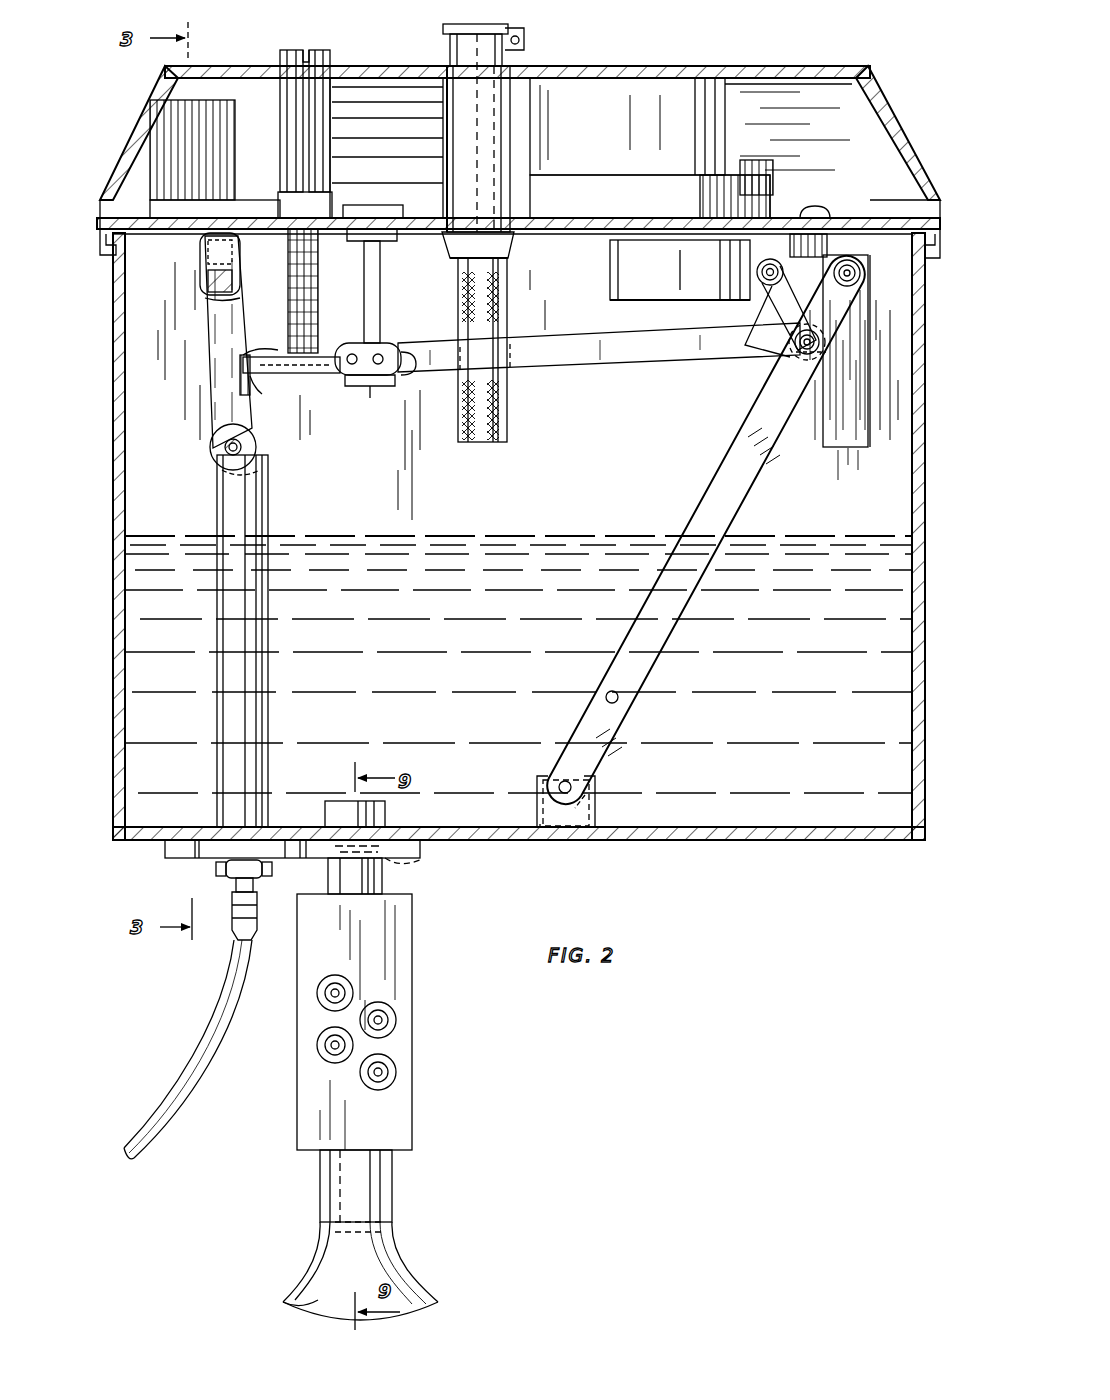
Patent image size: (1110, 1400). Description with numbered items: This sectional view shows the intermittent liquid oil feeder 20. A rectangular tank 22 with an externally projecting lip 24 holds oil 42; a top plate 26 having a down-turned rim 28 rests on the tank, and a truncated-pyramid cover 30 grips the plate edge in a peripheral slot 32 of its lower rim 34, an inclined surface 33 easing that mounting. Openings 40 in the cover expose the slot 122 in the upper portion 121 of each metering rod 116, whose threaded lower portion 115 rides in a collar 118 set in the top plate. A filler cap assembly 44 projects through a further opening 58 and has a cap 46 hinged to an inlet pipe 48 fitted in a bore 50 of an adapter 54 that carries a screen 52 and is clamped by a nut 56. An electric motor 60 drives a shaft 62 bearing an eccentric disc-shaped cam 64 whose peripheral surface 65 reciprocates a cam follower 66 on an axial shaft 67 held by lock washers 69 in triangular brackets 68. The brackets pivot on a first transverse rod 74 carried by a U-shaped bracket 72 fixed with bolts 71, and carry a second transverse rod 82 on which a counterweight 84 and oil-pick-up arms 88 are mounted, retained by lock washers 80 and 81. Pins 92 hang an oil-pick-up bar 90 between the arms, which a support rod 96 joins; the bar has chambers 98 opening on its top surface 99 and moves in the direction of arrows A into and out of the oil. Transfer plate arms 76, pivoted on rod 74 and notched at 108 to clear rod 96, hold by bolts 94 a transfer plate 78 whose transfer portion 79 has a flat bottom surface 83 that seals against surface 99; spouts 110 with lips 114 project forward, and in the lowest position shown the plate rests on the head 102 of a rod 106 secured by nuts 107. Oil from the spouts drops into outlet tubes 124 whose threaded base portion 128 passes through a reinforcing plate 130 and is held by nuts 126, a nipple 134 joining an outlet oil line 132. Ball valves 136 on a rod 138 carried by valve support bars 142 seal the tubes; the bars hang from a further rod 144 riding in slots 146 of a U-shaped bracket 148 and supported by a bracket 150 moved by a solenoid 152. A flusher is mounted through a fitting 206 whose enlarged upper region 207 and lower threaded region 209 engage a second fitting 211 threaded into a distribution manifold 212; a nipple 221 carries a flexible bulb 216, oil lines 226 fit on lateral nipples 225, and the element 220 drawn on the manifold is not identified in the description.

The intermittent liquid oil feeder 20 is at (905, 98).
The rectangular tank 22 is at (113, 770).
The externally projecting lip 24 is at (912, 252).
The top plate 26 is at (830, 218).
The down-turned rim 28 is at (885, 240).
The cover 30 is at (900, 124).
The peripheral slot 32 is at (932, 195).
The inclined surface 33 is at (106, 258).
The lower rim 34 is at (945, 248).
The openings 40 is at (332, 72).
The oil 42 is at (818, 552).
The filler cap assembly 44 is at (452, 24).
The cap 46 is at (526, 38).
The inlet pipe 48 is at (452, 58).
The bore 50 is at (512, 146).
The screen 52 is at (508, 300).
The adapter 54 is at (447, 150).
The nut 56 is at (455, 258).
The further opening 58 is at (548, 70).
The electric motor 60 is at (722, 128).
The drive shaft 62 is at (705, 240).
The disc-shaped cam 64 is at (648, 296).
The peripheral surface 65 is at (610, 262).
The cam follower 66 is at (740, 218).
The axial shaft 67 is at (775, 258).
The triangular brackets 68 is at (770, 300).
The lock washers 69 is at (770, 335).
The bolts 71 is at (808, 206).
The U-shaped bracket 72 is at (812, 234).
The first transverse rod 74 is at (800, 358).
The transfer plate arms 76 is at (592, 365).
The transfer plate 78 is at (355, 382).
The transfer portion 79 is at (244, 352).
The lock washers 80 is at (862, 282).
The lock washers 81 is at (820, 342).
The second transverse rod 82 is at (860, 278).
The flat bottom surface 83 is at (295, 374).
The counterweight 84 is at (860, 414).
The oil-pick-up arms 88 is at (758, 472).
The oil-pick-up bar 90 is at (596, 818).
The pins 92 is at (560, 781).
The bolts 94 is at (382, 353).
The support rod 96 is at (620, 702).
The chambers 98 is at (600, 792).
The top surface 99 is at (537, 778).
The head 102 is at (378, 390).
The rod 106 is at (372, 300).
The nuts 107 is at (390, 241).
The notches 108 is at (420, 378).
The spouts 110 is at (240, 374).
The lip 114 is at (260, 394).
The threaded lower portion 115 is at (290, 318).
The metering rod 116 is at (338, 150).
The collar 118 is at (345, 205).
The upper portion 121 is at (290, 155).
The slot 122 is at (306, 60).
The outlet tube 124 is at (262, 510).
The nuts 126 is at (216, 868).
The threaded base portion 128 is at (253, 886).
The reinforcing plate 130 is at (198, 846).
The outlet oil line 132 is at (202, 1052).
The nipple 134 is at (232, 898).
The ball valves 136 is at (258, 446).
The rod 138 is at (228, 447).
The valve support bars 142 is at (215, 340).
The further rod 144 is at (205, 292).
The slots 146 is at (200, 262).
The U-shaped bracket 148 is at (240, 282).
The bracket 150 is at (236, 262).
The solenoid 152 is at (215, 159).
The fitting 206 is at (388, 818).
The upper region 207 is at (336, 801).
The lower threaded region 209 is at (420, 872).
The second fitting 211 is at (384, 888).
The distribution manifold 212 is at (404, 944).
The bulb 216 is at (395, 1264).
The push buttons 220 is at (388, 1062).
The nipple 221 is at (392, 1186).
The nipple 225 is at (390, 1012).
The oil line 226 is at (362, 1080).
The arrows A is at (630, 650).